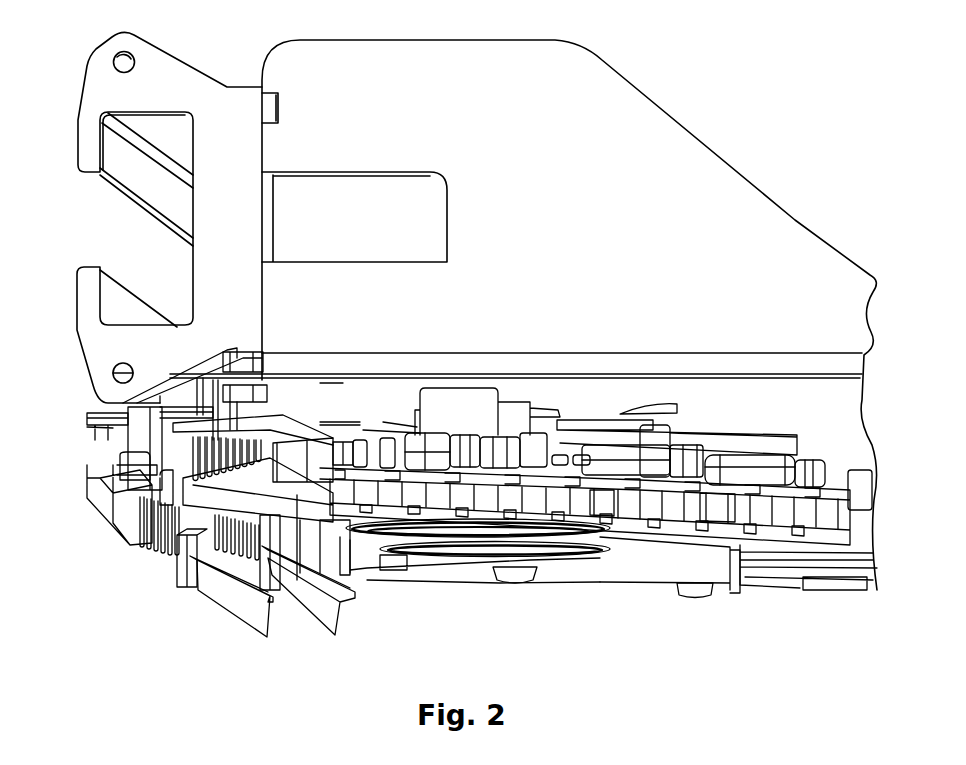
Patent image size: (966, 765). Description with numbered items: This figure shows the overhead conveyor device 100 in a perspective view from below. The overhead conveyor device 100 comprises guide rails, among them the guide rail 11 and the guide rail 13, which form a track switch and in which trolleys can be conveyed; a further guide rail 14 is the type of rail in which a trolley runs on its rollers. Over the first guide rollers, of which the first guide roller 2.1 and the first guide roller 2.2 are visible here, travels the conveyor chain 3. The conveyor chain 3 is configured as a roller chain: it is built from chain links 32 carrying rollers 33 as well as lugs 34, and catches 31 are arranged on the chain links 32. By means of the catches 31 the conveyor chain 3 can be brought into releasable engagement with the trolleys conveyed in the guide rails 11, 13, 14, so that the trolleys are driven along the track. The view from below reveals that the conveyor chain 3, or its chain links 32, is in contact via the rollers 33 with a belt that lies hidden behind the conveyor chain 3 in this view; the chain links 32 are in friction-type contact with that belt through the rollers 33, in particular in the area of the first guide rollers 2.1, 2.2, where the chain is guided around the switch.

The overhead conveyor device 100 is at (718, 667).
The guide rail 13 is at (132, 527).
The guide rail 14 is at (255, 610).
The guide rail 11 is at (357, 567).
The first guide roller 2.1 is at (455, 548).
The first guide roller 2.2 is at (520, 548).
The conveyor chain 3 is at (653, 538).
The catches 31 is at (813, 470).
The chain links 32 is at (610, 521).
The rollers 33 is at (763, 512).
The lugs 34 is at (698, 532).